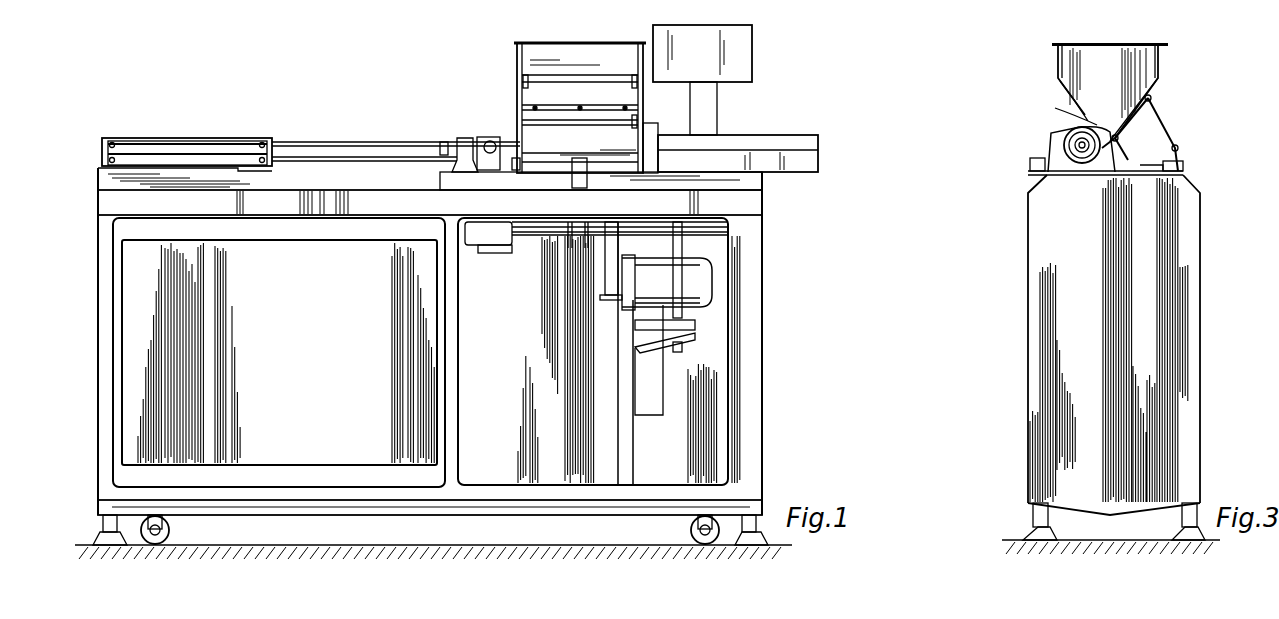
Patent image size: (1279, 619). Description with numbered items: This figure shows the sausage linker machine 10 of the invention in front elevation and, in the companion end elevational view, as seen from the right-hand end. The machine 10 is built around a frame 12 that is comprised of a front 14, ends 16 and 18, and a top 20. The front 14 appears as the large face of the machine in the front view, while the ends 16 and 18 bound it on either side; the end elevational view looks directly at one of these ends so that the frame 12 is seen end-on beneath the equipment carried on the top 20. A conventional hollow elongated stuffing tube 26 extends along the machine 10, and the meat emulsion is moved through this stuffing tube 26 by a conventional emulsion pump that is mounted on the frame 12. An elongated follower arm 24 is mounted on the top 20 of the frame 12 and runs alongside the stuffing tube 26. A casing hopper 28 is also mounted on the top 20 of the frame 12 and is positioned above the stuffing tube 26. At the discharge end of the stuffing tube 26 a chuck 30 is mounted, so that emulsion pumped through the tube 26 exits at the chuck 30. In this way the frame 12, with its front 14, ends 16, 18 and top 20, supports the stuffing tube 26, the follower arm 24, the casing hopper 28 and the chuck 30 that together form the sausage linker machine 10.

In FIG. 1, the sausage linker machine 10 is at (346, 108).
In FIG. 3, the sausage linker machine 10 is at (1173, 82).
In FIG. 1, the frame 12 is at (327, 515).
In FIG. 1, the front 14 is at (297, 352).
In FIG. 3, the front 14 is at (1028, 215).
In FIG. 1, the end 16 is at (98, 357).
In FIG. 1, the end 18 is at (765, 218).
In FIG. 3, the end 18 is at (1067, 230).
In FIG. 1, the top 20 is at (314, 193).
In FIG. 3, the top 20 is at (1180, 153).
In FIG. 1, the follower arm 24 is at (336, 158).
In FIG. 1, the stuffing tube 26 is at (362, 150).
In FIG. 1, the casing hopper 28 is at (518, 67).
In FIG. 3, the casing hopper 28 is at (1147, 62).
In FIG. 1, the chuck 30 is at (657, 123).